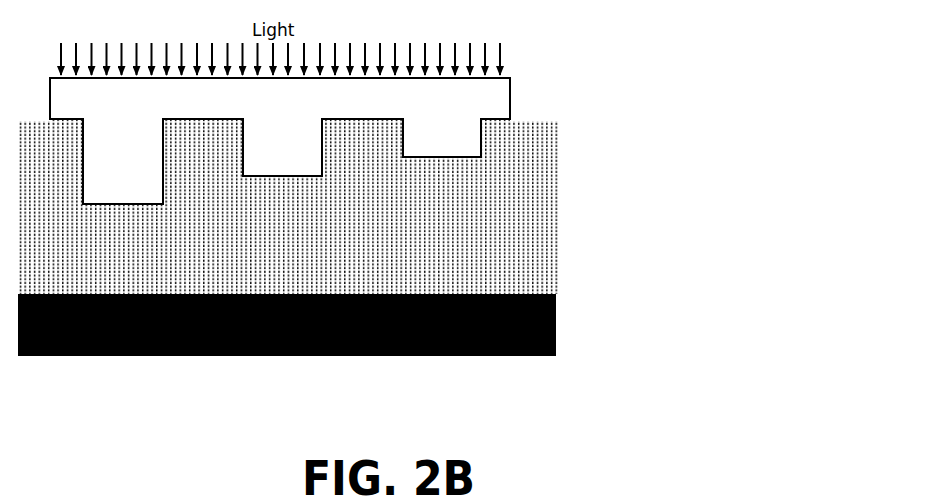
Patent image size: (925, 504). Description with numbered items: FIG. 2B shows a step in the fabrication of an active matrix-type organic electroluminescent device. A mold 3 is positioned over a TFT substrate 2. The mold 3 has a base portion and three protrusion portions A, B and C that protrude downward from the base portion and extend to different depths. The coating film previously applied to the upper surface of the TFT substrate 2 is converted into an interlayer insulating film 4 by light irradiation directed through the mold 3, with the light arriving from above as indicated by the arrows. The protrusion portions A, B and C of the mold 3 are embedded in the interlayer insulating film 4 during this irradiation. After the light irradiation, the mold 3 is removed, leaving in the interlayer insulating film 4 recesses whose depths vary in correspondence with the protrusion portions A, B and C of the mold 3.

The TFT substrate 2 is at (564, 322).
The mold 3 is at (511, 97).
The interlayer insulating film 4 is at (558, 175).